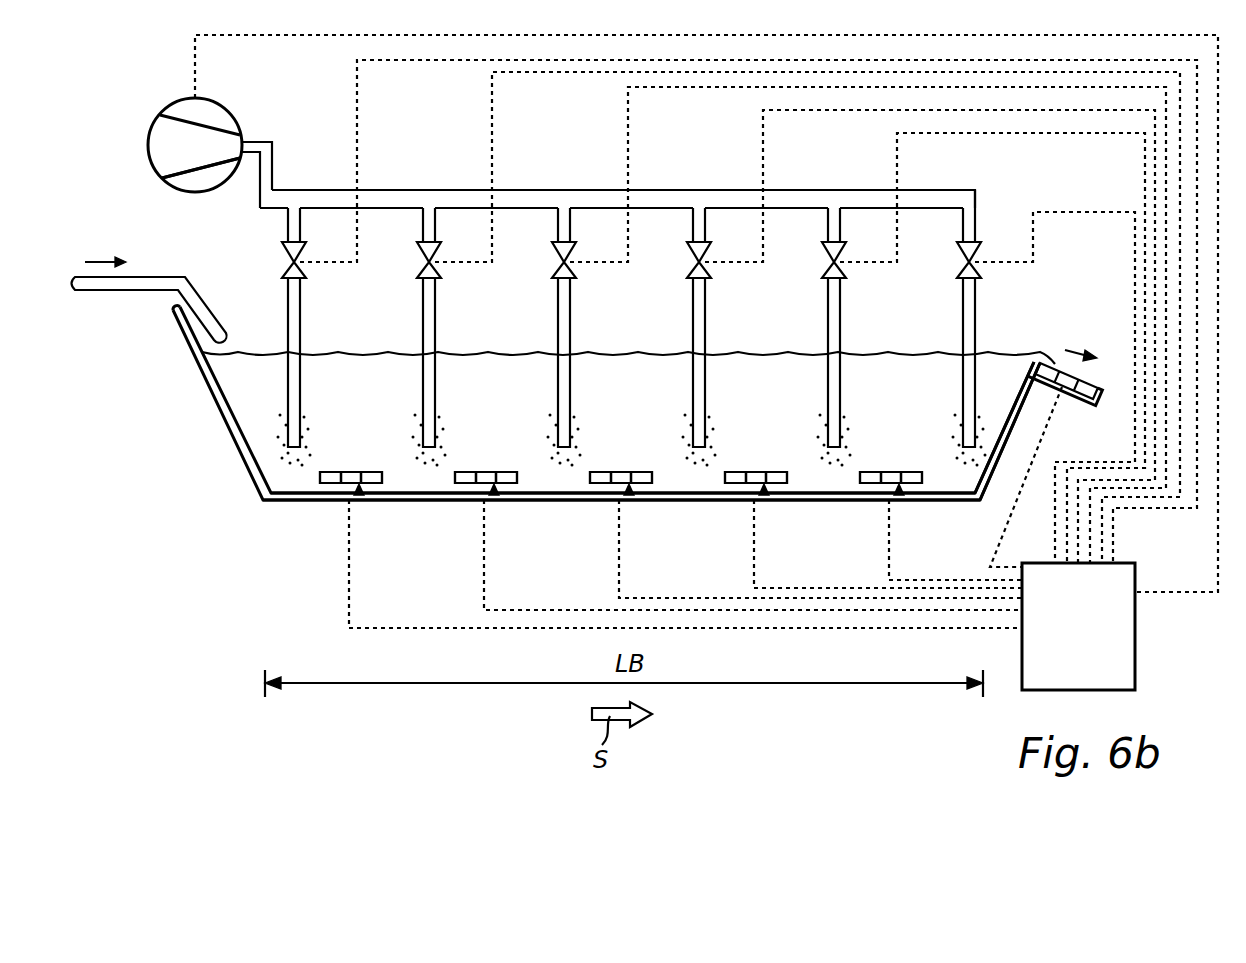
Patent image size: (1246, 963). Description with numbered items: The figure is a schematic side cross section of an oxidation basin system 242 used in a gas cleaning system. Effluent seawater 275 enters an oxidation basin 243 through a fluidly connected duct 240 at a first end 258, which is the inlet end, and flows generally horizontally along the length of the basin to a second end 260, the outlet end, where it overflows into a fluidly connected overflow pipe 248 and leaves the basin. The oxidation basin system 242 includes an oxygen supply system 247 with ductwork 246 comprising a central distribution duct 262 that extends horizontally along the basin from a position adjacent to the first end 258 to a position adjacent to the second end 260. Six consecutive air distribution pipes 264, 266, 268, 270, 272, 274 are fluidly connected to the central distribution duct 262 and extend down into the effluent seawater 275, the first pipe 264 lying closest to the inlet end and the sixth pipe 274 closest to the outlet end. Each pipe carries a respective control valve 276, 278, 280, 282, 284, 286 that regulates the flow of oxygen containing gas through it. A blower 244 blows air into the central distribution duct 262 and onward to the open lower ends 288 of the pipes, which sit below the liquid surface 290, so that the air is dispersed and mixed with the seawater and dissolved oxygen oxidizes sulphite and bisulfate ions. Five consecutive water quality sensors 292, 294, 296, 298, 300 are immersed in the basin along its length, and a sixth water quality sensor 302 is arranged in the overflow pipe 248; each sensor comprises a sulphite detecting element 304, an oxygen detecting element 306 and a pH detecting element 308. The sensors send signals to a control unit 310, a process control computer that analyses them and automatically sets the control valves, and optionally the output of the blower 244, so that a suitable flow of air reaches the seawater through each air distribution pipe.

The duct 240 is at (117, 293).
The oxidation basin system 242 is at (155, 119).
The oxidation basin 243 is at (278, 502).
The blower 244 is at (152, 172).
The ductwork 246 is at (534, 190).
The oxygen supply system 247 is at (315, 174).
The overflow pipe 248 is at (1083, 403).
The first end 258 is at (215, 403).
The second end 260 is at (1013, 450).
The central distribution duct 262 is at (660, 190).
The first air distribution pipe 264 is at (301, 316).
The second air distribution pipe 266 is at (436, 316).
The third air distribution pipe 268 is at (571, 316).
The fourth air distribution pipe 270 is at (706, 316).
The fifth air distribution pipe 272 is at (841, 316).
The sixth air distribution pipe 274 is at (976, 318).
The effluent seawater 275 is at (258, 360).
The control valve 276 is at (301, 266).
The control valve 278 is at (436, 266).
The control valve 280 is at (571, 266).
The control valve 282 is at (706, 266).
The control valve 284 is at (841, 266).
The control valve 286 is at (976, 266).
The lower ends 288 is at (294, 457).
The liquid surface 290 is at (518, 350).
The first water quality sensor 292 is at (359, 505).
The second water quality sensor 294 is at (494, 505).
The third water quality sensor 296 is at (629, 505).
The fourth water quality sensor 298 is at (764, 505).
The fifth water quality sensor 300 is at (899, 505).
The sixth water quality sensor 302 is at (1042, 381).
The sulphite detecting element 304 is at (356, 472).
The oxygen detecting element 306 is at (374, 472).
The pH detecting element 308 is at (332, 472).
The control unit 310 is at (1135, 645).